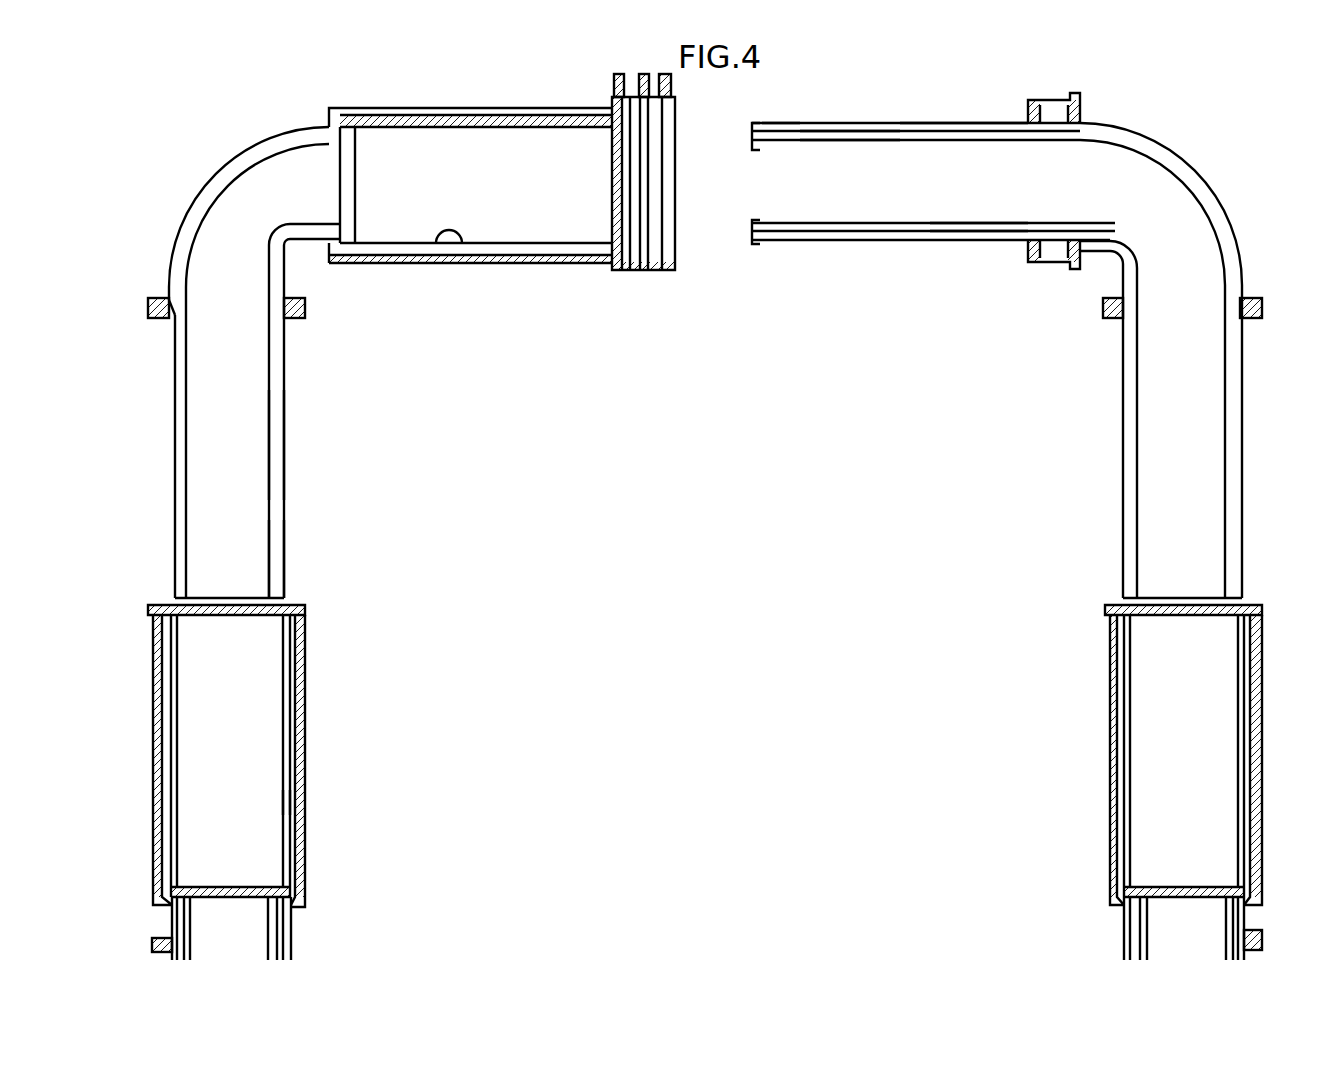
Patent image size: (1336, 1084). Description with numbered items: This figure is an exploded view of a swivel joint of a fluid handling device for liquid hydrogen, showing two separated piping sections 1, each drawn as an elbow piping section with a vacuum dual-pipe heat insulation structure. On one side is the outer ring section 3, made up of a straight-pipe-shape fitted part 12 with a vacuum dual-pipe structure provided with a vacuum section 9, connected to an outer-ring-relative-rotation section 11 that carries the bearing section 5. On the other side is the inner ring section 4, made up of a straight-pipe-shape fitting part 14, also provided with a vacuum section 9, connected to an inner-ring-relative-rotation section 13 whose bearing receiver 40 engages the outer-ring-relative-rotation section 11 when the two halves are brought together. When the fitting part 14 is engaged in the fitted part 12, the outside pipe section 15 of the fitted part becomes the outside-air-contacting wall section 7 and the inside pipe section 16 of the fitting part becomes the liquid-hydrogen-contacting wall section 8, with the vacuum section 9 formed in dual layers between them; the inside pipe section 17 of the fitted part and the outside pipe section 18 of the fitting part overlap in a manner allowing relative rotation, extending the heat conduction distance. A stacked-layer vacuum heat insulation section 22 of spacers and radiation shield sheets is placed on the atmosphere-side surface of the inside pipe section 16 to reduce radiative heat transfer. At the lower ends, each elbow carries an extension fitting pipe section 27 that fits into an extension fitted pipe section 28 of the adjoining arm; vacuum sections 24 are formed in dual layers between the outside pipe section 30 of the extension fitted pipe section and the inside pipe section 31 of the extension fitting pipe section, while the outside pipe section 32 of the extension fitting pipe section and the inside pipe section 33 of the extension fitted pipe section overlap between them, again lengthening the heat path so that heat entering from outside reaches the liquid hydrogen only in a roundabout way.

The piping section 1 is at (213, 152).
The outer ring section 3 is at (622, 232).
The inner ring section 4 is at (970, 248).
The bearing section 5 is at (666, 178).
The outside-air-contacting wall section 7 is at (698, 441).
The liquid-hydrogen-contacting wall section 8 is at (846, 147).
The vacuum section 9 is at (543, 254).
The outer-ring-relative-rotation section 11 is at (671, 210).
The fitted part 12 is at (485, 268).
The inner-ring-relative-rotation section 13 is at (1043, 97).
The fitting part 14 is at (975, 124).
The outside pipe section of the fitted section 15 is at (698, 441).
The inside pipe section of the fitting section 16 is at (862, 111).
The inside pipe section of the fitted section 17 is at (446, 244).
The outside pipe section of the fitting section 18 is at (787, 124).
The stacked-layer vacuum heat insulation section 22 is at (815, 234).
The vacuum section 24 is at (286, 536).
The extension fitting pipe section 27 is at (286, 440).
The extension fitted pipe section 28 is at (307, 785).
The outside pipe section of the extension fitted pipe section 30 is at (705, 756).
The inside pipe section of the extension fitting pipe section 31 is at (262, 479).
The outside pipe section of the extension fitting pipe section 32 is at (286, 415).
The inside pipe section of the extension fitted pipe section 33 is at (270, 803).
The bearing receiver 40 is at (1058, 267).